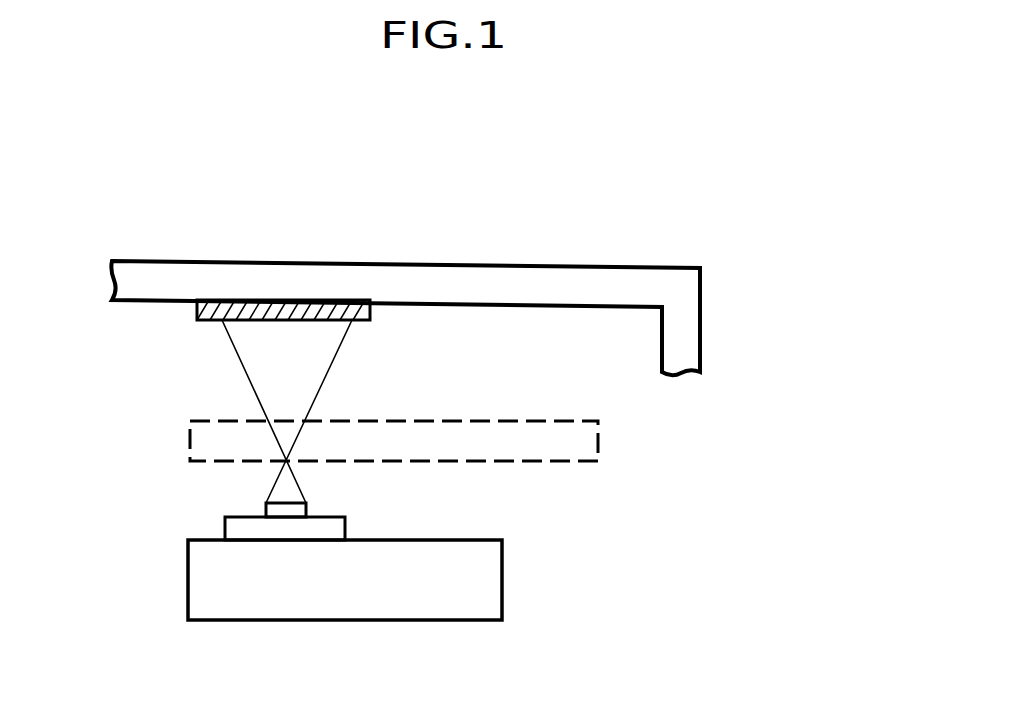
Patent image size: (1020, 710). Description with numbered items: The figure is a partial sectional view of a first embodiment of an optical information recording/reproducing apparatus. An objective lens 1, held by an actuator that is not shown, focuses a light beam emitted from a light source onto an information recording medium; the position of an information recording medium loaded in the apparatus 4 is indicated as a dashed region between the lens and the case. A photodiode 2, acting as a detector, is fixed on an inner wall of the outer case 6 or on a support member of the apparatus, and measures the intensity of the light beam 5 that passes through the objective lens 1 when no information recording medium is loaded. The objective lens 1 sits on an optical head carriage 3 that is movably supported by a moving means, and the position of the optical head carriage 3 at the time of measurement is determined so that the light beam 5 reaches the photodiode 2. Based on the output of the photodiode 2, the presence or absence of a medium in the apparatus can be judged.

The objective lens 1 is at (265, 508).
The photodiode 2 is at (197, 310).
The optical head carriage 3 is at (347, 620).
The position of information recording medium loaded in apparatus 4 is at (353, 462).
The light beam 5 is at (332, 375).
The outer case 6 is at (395, 265).